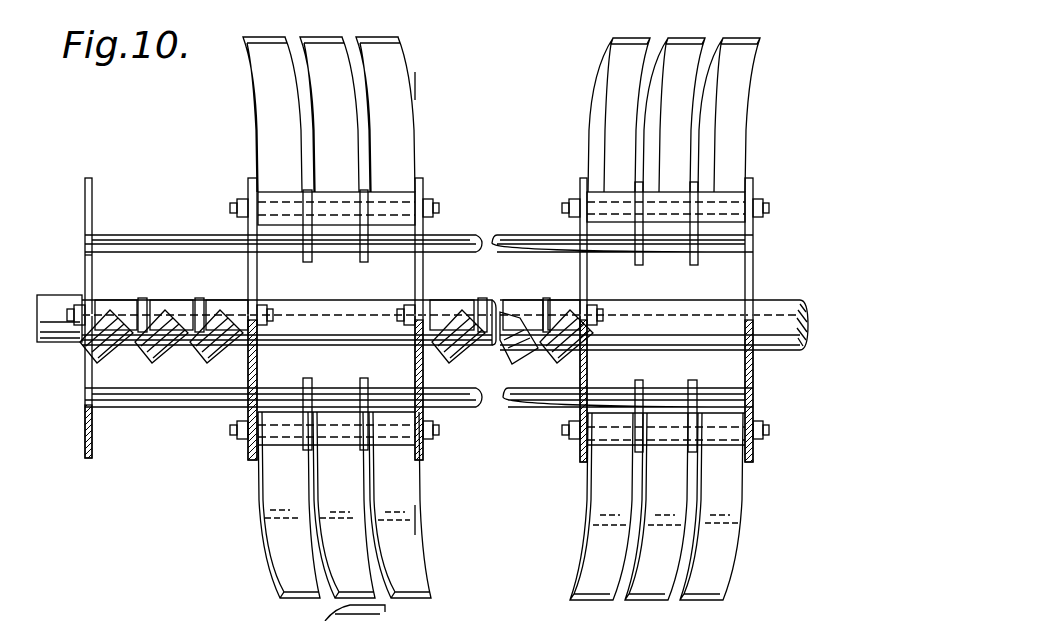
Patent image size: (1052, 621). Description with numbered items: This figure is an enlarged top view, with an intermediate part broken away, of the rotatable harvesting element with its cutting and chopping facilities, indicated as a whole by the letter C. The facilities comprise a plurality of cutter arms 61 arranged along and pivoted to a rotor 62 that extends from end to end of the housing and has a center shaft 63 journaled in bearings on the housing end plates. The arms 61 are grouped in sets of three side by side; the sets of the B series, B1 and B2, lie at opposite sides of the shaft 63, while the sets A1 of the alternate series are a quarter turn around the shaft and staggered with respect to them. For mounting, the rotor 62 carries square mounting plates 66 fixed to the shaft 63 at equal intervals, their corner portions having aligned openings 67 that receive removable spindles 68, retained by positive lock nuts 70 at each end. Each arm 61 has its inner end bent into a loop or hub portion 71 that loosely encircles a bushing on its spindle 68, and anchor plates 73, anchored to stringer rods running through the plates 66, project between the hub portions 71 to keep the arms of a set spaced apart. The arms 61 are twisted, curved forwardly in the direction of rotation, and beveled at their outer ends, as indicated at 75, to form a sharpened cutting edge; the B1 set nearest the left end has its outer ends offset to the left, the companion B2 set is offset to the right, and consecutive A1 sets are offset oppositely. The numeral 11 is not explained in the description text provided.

The blade edge 11 is at (416, 84).
The cutter arms 61 is at (403, 128).
The rotor 62 is at (84, 262).
The center shaft 63 is at (56, 342).
The mounting plates 66 is at (93, 261).
The openings 67 is at (92, 204).
The spindles 68 is at (232, 210).
The lock nuts 70 is at (263, 308).
The loop or hub portions 71 is at (207, 306).
The anchor plates 73 is at (143, 300).
The beveled cutting edge 75 is at (96, 345).
The B1 set of cutter arms B1 is at (256, 101).
The B2 set of cutter arms B2 is at (418, 495).
The A1 set of cutter arms A1 is at (165, 362).
The rotatable harvesting element with cutting and chopping facilities C is at (230, 150).